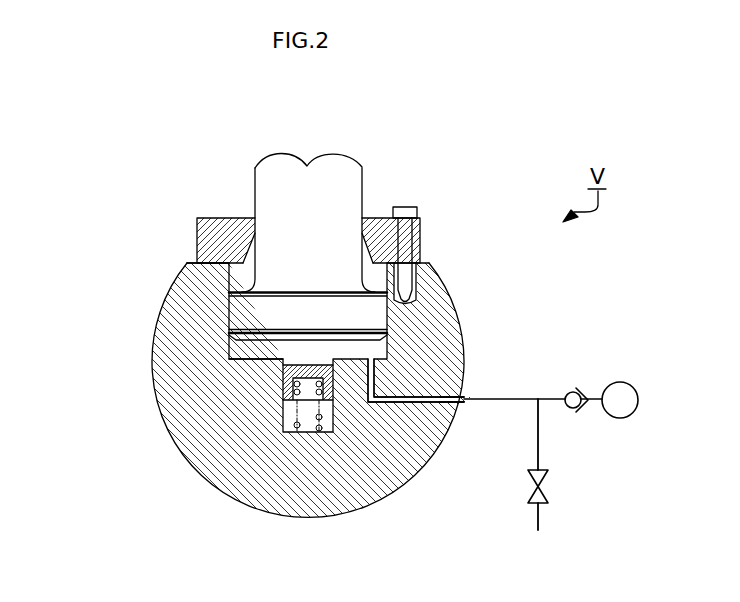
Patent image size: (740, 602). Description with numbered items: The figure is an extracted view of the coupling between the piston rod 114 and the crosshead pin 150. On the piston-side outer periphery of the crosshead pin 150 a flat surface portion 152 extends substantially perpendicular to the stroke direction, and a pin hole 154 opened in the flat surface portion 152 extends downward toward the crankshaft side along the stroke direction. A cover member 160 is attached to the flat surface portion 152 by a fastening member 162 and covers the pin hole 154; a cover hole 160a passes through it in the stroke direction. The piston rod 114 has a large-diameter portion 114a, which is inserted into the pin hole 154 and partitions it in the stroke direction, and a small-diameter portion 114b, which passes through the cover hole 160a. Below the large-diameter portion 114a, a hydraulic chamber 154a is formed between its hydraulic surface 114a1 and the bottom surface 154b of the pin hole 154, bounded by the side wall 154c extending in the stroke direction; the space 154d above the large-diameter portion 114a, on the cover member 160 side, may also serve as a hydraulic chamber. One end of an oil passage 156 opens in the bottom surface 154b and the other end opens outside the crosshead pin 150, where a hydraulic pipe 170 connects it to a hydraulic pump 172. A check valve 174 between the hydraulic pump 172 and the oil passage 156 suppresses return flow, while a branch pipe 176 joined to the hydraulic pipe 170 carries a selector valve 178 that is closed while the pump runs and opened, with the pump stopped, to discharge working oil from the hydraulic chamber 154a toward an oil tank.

The piston rod 114 is at (281, 205).
The large-diameter portion 114a is at (246, 310).
The hydraulic surface 114a1 is at (300, 346).
The small-diameter portion 114b is at (294, 188).
The crosshead pin 150 is at (161, 418).
The flat surface portion 152 is at (196, 253).
The pin hole 154 is at (229, 343).
The hydraulic chamber 154a is at (251, 360).
The bottom surface 154b is at (268, 360).
The side wall 154c is at (390, 342).
The space 154d is at (187, 264).
The oil passage 156 is at (433, 402).
The cover member 160 is at (295, 210).
The cover hole 160a is at (368, 244).
The fastening member 162 is at (410, 207).
The hydraulic pipe 170 is at (528, 398).
The hydraulic pump 172 is at (624, 381).
The check valve 174 is at (576, 386).
The branch pipe 176 is at (540, 439).
The selector valve 178 is at (533, 504).